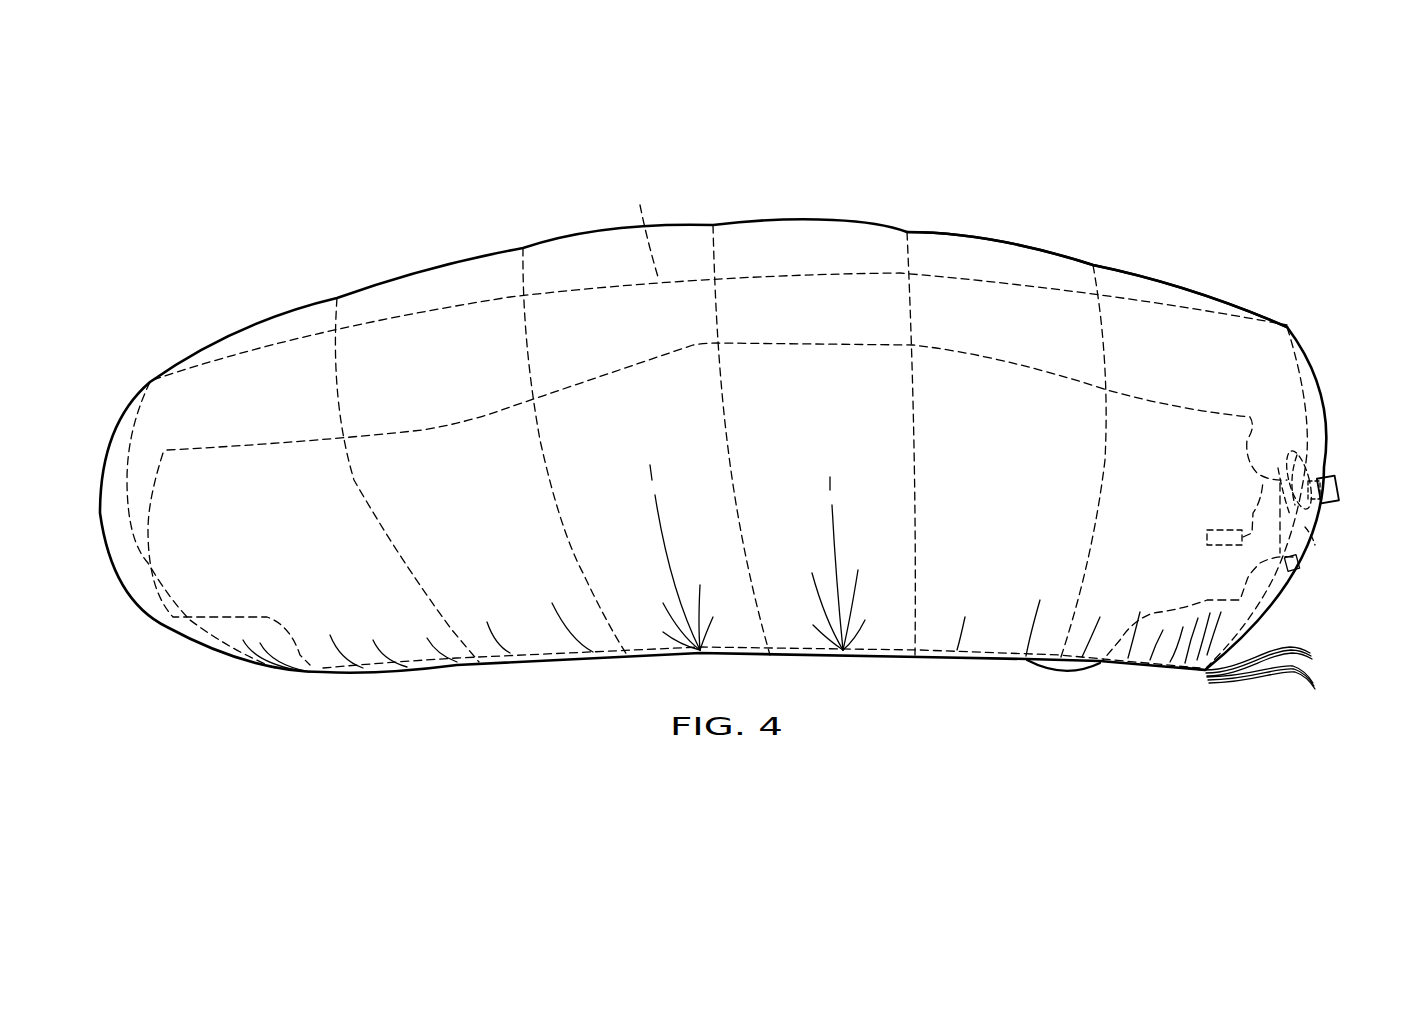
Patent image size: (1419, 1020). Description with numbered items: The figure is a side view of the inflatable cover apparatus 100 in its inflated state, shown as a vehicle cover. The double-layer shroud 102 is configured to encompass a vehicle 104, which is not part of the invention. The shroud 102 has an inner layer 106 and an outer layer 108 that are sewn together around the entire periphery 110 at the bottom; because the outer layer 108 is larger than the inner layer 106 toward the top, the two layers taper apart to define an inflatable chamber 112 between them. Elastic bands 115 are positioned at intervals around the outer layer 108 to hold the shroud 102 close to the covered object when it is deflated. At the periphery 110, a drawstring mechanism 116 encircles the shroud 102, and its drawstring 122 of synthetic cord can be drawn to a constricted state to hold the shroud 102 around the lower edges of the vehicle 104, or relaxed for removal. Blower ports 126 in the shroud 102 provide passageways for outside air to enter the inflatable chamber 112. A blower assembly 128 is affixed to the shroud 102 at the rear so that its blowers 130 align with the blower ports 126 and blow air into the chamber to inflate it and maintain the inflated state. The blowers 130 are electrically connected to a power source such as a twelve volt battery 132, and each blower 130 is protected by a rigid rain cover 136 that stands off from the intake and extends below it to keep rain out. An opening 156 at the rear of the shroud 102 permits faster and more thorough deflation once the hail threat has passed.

The inflatable cover apparatus 100 is at (385, 170).
The double-layer shroud 102 is at (1012, 235).
The vehicle 104 is at (440, 427).
The inner layer 106 is at (649, 226).
The outer layer 108 is at (583, 234).
The periphery 110 is at (463, 665).
The inflatable chamber 112 is at (826, 259).
The elastic bands 115 is at (337, 312).
The drawstring mechanism 116 is at (1208, 695).
The drawstring 122 is at (1293, 677).
The blower ports 126 is at (1313, 460).
The blower assembly 128 is at (1355, 533).
The blowers 130 is at (1335, 505).
The battery 132 is at (1222, 530).
The rain cover 136 is at (1337, 490).
The opening 156 is at (1298, 563).